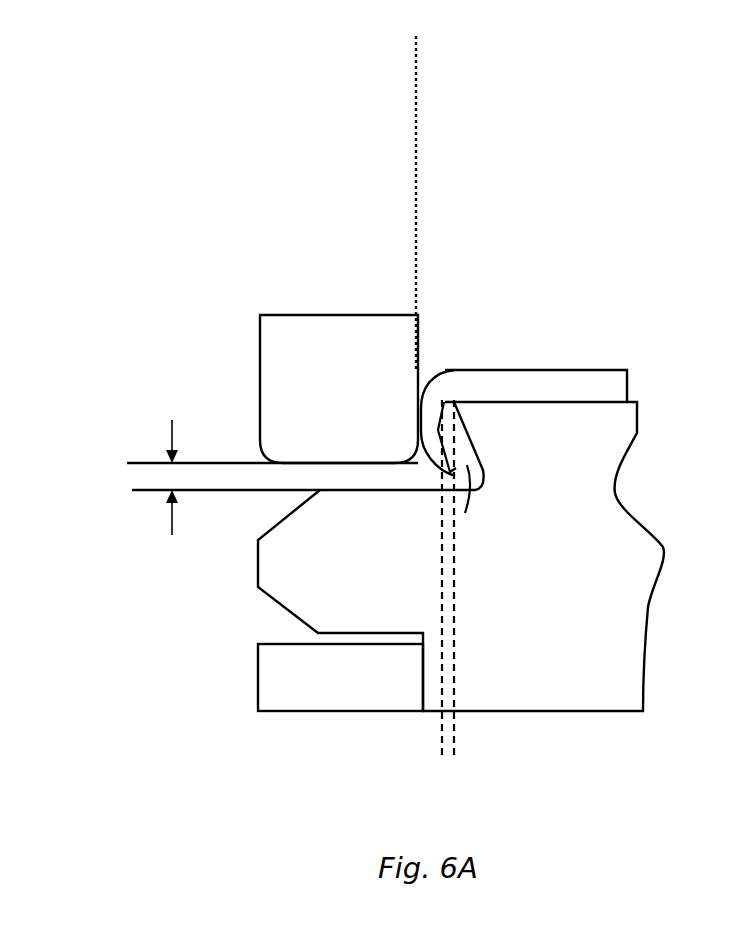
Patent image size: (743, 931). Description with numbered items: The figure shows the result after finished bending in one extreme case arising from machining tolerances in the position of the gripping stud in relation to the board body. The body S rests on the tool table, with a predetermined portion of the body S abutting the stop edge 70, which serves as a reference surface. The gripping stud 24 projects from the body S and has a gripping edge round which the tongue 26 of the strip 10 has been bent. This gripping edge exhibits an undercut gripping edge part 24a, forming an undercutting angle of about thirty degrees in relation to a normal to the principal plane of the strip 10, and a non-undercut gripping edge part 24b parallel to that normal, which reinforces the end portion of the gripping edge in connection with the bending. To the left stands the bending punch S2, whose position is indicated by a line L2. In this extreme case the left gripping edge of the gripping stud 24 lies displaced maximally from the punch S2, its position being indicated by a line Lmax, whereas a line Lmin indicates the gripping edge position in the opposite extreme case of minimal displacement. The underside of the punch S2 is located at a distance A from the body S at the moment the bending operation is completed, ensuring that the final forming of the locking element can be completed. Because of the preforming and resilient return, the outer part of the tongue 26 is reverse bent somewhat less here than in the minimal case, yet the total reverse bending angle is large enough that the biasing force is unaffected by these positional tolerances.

The strip 10 is at (536, 339).
The gripping stud 24 is at (420, 446).
The undercut gripping edge part 24a is at (414, 473).
The non-undercut gripping edge part 24b is at (423, 528).
The tongue 26 is at (454, 386).
The stop edge 70 is at (336, 711).
The body S is at (492, 556).
The bending punch S2 is at (339, 341).
The distance A is at (142, 477).
The line indicating position of the punch L2 is at (464, 204).
The line indicating minimally displaced gripping edge position Lmin is at (372, 609).
The line indicating maximally displaced gripping edge position Lmax is at (517, 610).